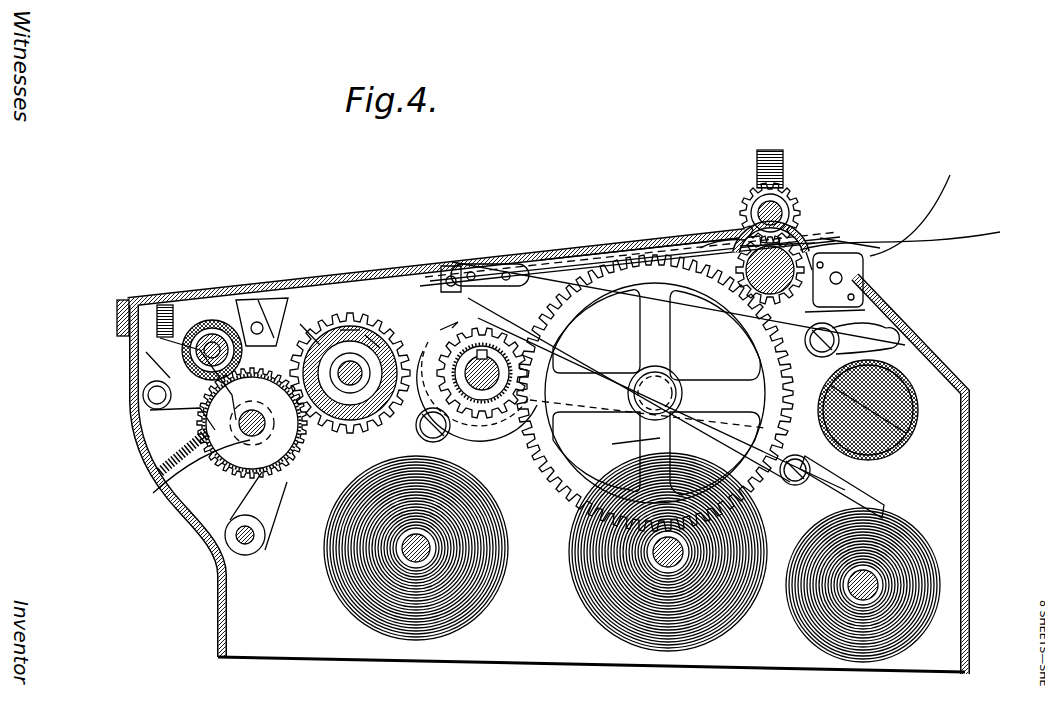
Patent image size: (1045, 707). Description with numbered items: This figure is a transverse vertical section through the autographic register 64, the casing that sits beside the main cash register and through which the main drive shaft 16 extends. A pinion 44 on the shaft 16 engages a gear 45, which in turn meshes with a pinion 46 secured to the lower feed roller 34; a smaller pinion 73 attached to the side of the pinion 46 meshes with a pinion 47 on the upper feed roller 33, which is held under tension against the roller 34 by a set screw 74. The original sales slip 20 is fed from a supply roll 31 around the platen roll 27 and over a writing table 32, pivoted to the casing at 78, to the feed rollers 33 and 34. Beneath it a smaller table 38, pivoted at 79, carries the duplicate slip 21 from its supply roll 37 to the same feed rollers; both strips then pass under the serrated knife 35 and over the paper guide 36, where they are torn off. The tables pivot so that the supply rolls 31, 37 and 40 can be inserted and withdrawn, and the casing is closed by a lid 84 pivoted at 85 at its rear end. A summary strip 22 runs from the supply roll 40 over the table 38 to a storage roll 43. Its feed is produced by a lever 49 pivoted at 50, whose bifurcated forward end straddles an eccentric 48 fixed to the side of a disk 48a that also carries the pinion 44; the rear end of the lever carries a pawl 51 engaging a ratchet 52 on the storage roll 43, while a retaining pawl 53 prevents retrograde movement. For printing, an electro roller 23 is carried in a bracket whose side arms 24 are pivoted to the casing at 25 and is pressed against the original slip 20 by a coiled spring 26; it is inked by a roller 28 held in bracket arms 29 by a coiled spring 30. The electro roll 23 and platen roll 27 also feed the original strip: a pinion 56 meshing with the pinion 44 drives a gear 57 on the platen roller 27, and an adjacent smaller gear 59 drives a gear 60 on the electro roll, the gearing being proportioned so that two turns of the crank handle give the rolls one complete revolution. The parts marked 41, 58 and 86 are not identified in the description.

The main drive shaft 16 is at (493, 408).
The original sales slip 20 is at (347, 458).
The duplicate slip 21 is at (807, 335).
The summary strip 22 is at (577, 340).
The electro roller 23 is at (165, 492).
The side arms 24 is at (233, 537).
The pivot 25 is at (217, 582).
The coiled spring 26 is at (156, 438).
The platen roll 27 is at (325, 318).
The inking roller 28 is at (225, 322).
The bracket arms 29 is at (180, 352).
The coiled spring 30 is at (118, 308).
The supply roll 31 is at (405, 560).
The writing table 32 is at (395, 295).
The upper feed roller 33 is at (790, 205).
The lower feed roller 34 is at (862, 270).
The knife 35 is at (813, 228).
The paper guide 36 is at (798, 245).
The supply roll 37 is at (665, 556).
The smaller table 38 is at (530, 268).
The supply roll 40 is at (880, 585).
The guide bracket 41 is at (490, 266).
The storage roll 43 is at (912, 400).
The pinion 44 is at (493, 338).
The gear 45 is at (650, 290).
The pinion 46 is at (867, 310).
The pinion 47 is at (742, 200).
The eccentric 48 is at (572, 360).
The disk 48a is at (520, 428).
The lever 49 is at (822, 427).
The pivot 50 is at (680, 380).
The pawl 51 is at (850, 488).
The ratchet 52 is at (918, 415).
The retaining pawl 53 is at (898, 339).
The pinion 56 is at (470, 458).
The gear 57 is at (372, 318).
The gear hub 58 is at (348, 318).
The smaller gear 59 is at (438, 316).
The gear 60 is at (290, 470).
The autographic register 64 is at (970, 517).
The smaller pinion 73 is at (852, 243).
The set screw 74 is at (780, 152).
The pivot 78 is at (300, 322).
The pivot 79 is at (698, 245).
The lid 84 is at (148, 303).
The pivot 85 is at (845, 283).
The rail bar 86 is at (580, 243).